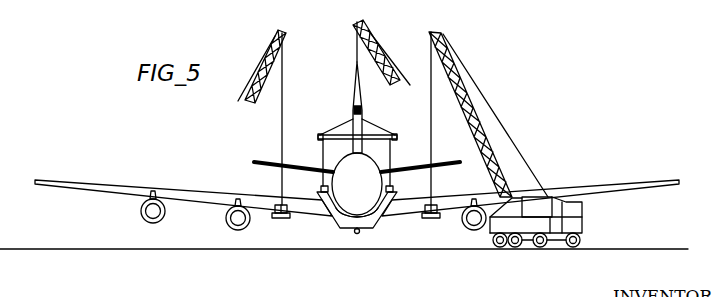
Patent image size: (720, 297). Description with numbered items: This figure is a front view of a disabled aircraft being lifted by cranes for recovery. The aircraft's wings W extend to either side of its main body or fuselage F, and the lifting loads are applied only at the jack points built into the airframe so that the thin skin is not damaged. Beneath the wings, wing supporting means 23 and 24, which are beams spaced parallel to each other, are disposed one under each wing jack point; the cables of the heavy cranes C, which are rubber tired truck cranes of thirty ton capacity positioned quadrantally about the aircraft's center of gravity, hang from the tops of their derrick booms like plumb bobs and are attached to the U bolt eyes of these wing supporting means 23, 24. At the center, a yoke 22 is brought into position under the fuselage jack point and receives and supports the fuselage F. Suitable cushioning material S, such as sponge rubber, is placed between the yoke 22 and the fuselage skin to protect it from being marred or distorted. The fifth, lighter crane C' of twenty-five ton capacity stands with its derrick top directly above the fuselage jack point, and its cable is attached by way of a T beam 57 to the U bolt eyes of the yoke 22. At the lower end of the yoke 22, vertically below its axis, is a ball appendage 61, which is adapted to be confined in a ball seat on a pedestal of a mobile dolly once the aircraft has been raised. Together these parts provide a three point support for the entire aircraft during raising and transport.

The yoke 22 is at (372, 228).
The wing supporting means 23 is at (280, 221).
The wing supporting means 24 is at (432, 221).
The T beam 57 is at (346, 132).
The ball appendage 61 is at (354, 233).
The wings W is at (205, 194).
The fuselage F is at (361, 181).
The cushioning material S is at (366, 212).
The cranes C is at (427, 137).
The crane C' is at (381, 44).